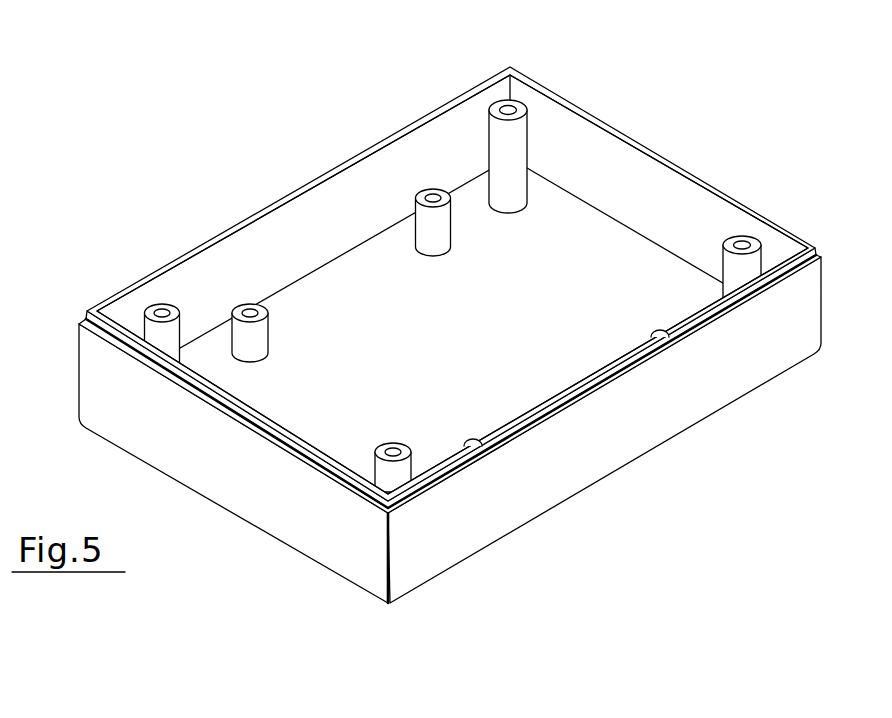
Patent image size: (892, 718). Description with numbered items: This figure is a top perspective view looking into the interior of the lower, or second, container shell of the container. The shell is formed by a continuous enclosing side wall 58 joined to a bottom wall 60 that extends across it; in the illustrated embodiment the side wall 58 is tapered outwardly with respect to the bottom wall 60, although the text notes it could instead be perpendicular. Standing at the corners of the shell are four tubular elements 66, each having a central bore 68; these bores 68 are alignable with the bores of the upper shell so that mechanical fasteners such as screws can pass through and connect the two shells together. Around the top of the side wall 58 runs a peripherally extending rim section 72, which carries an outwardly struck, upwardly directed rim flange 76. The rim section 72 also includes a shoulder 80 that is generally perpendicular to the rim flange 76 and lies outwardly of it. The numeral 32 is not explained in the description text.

The tray housing 32 is at (632, 62).
The side wall 58 is at (730, 373).
The bottom wall 60 is at (495, 313).
The tubular elements 66 is at (165, 337).
The central bores 68 is at (160, 312).
The rim section 72 is at (328, 160).
The rim flange 76 is at (627, 355).
The shoulder 80 is at (620, 376).